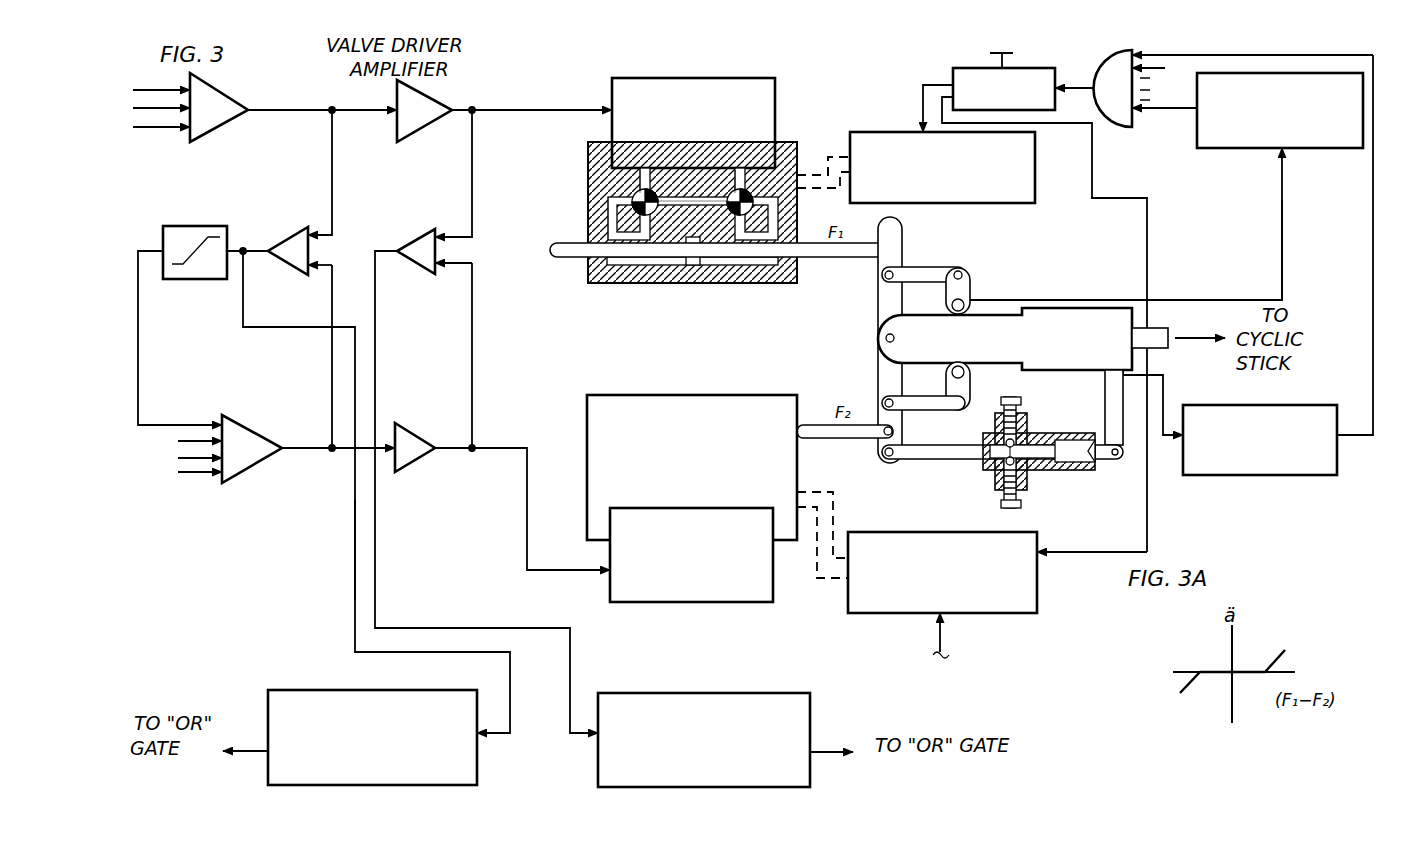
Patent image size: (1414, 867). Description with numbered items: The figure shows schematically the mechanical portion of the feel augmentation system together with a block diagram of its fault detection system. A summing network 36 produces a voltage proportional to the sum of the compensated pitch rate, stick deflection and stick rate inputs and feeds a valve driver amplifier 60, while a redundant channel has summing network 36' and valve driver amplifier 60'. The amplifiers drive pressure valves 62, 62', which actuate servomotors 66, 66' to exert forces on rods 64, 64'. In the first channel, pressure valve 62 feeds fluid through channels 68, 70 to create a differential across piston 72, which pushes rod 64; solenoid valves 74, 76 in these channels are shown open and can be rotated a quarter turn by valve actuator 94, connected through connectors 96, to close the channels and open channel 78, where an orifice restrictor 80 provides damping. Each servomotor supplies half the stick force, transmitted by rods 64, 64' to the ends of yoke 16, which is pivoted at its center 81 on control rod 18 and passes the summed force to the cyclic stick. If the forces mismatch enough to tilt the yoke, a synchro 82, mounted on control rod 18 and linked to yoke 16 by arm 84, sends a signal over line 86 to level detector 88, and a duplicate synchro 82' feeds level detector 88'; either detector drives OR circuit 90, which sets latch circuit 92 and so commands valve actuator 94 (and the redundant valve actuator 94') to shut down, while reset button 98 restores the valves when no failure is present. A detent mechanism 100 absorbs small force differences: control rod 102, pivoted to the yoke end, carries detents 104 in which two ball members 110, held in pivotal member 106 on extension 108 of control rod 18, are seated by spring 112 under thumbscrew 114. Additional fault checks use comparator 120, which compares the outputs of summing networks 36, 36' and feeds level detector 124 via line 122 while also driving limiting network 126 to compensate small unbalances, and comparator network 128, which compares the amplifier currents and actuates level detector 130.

The summing network 36 is at (235, 106).
The valve driver amplifier 60 is at (440, 106).
The pressure valve 62 is at (724, 114).
The servomotor 66 is at (642, 212).
The channel 68 is at (716, 190).
The channel 70 is at (647, 177).
The solenoid valve 74 is at (621, 195).
The solenoid valve 76 is at (757, 208).
The channel 78 is at (676, 210).
The orifice restrictor 80 is at (690, 196).
The piston 72 is at (692, 262).
The rod 64 is at (721, 269).
The connectors 96 is at (814, 168).
The valve actuator 94 is at (963, 182).
The latch circuit 92 is at (953, 72).
The reset button 98 is at (1007, 51).
The OR circuit 90 is at (1121, 126).
The level detector 88 is at (1265, 132).
The line 86 is at (1283, 204).
The arm 84 is at (923, 268).
The synchro 82 is at (974, 281).
The control rod 18 is at (990, 309).
The center 81 is at (884, 337).
The yoke 16 is at (878, 368).
The limiting network 126 is at (197, 213).
The comparator 120 is at (293, 218).
The comparator network 128 is at (408, 231).
The line 122 is at (353, 563).
The level detector 124 is at (437, 784).
The level detector 130 is at (677, 786).
The summing network 36' is at (258, 463).
The valve driver amplifier 60' is at (427, 464).
The servomotor 66' is at (686, 443).
The pressure valve 62' is at (691, 579).
The rod 64' is at (845, 449).
The synchro 82' is at (927, 400).
The valve actuator 94' is at (942, 598).
The level detector 88' is at (1260, 461).
The control rod 102 is at (907, 463).
The detent 104 is at (1002, 448).
The ball members 110 is at (1004, 458).
The detent mechanism 100 is at (1045, 476).
The pivotal member 106 is at (1085, 472).
The extension 108 is at (1132, 440).
The spring 112 is at (1030, 418).
The thumbscrew 114 is at (1016, 398).